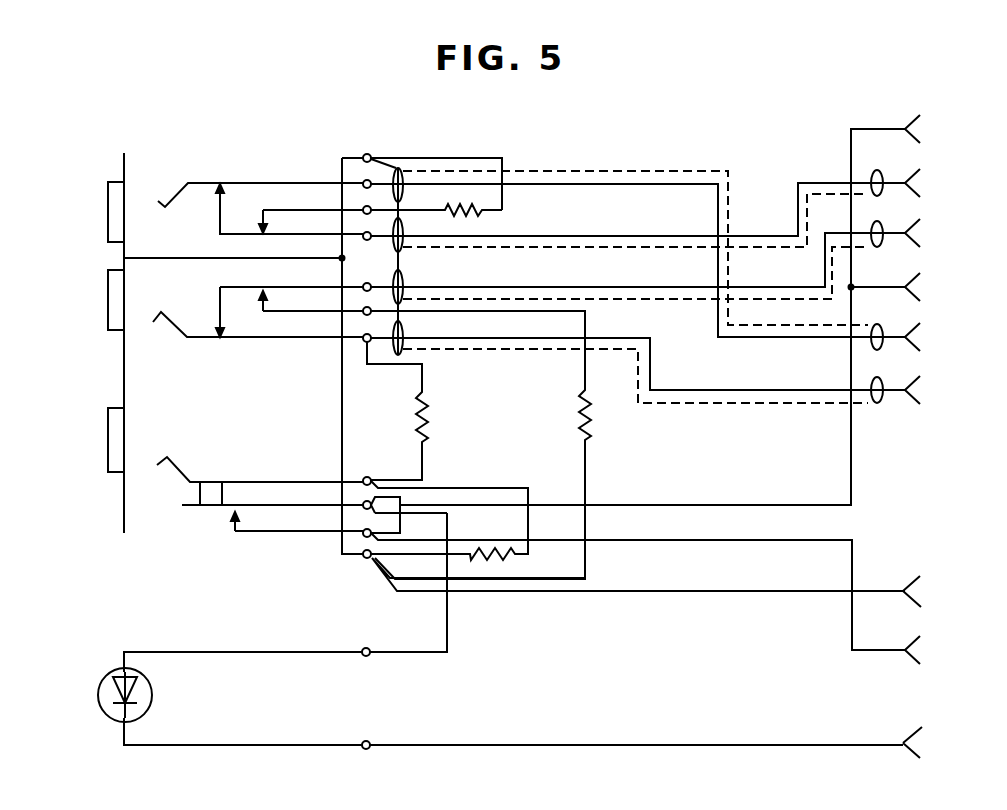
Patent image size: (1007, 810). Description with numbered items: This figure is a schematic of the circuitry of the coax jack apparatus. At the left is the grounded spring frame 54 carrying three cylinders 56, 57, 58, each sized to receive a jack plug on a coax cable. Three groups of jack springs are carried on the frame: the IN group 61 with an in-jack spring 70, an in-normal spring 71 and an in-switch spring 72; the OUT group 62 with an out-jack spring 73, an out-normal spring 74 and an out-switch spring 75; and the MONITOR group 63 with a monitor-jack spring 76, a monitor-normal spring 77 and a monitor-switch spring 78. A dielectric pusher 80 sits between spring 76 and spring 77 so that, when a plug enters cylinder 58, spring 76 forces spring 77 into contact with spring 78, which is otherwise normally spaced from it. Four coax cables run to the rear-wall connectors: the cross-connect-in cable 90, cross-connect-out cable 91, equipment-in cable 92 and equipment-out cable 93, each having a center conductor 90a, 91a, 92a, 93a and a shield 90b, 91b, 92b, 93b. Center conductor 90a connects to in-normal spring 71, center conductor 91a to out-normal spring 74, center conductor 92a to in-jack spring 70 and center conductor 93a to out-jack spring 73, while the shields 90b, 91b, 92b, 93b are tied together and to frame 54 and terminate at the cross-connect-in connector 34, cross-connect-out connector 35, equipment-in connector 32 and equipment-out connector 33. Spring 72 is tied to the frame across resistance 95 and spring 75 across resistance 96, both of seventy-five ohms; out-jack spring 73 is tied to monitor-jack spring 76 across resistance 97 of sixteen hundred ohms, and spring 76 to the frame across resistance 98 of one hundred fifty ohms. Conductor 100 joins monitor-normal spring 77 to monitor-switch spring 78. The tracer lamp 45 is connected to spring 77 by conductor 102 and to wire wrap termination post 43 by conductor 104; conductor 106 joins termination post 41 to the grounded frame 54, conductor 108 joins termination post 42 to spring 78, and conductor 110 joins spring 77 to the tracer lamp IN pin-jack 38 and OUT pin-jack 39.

The equipment-in connector 32 is at (905, 336).
The equipment-out connector 33 is at (906, 395).
The cross-connect-in connector 34 is at (905, 178).
The cross-connect-out connector 35 is at (905, 232).
The tracer lamp IN pin-jack 38 is at (905, 129).
The tracer lamp OUT pin-jack 39 is at (905, 286).
The wire wrap termination post 41 is at (903, 591).
The wire wrap termination post 42 is at (905, 650).
The wire wrap termination post 43 is at (903, 743).
The tracer lamp 45 is at (155, 697).
The spring frame 54 is at (124, 363).
The cylinder 56 is at (108, 182).
The cylinder 57 is at (108, 270).
The cylinder 58 is at (108, 472).
The IN group 61 is at (259, 177).
The OUT group 62 is at (258, 327).
The MONITOR group 63 is at (256, 505).
The in-jack spring 70 is at (258, 168).
The in-normal spring 71 is at (215, 230).
The in-switch spring 72 is at (283, 212).
The out-jack spring 73 is at (168, 318).
The out-normal spring 74 is at (295, 287).
The out-switch spring 75 is at (310, 311).
The monitor-jack spring 76 is at (180, 463).
The monitor-normal spring 77 is at (320, 482).
The monitor-switch spring 78 is at (300, 535).
The dielectric pusher 80 is at (190, 500).
The cross-connect-in cable 90 is at (638, 183).
The center conductor 90a is at (657, 236).
The shield 90b is at (679, 247).
The cross-connect-out cable 91 is at (638, 266).
The center conductor 91a is at (698, 287).
The shield 91b is at (610, 299).
The equipment-in cable 92 is at (812, 340).
The center conductor 92a is at (583, 183).
The shield 92b is at (680, 170).
The equipment-out cable 93 is at (638, 394).
The center conductor 93a is at (790, 392).
The shield 93b is at (712, 403).
The resistance 95 is at (485, 212).
The resistance 96 is at (590, 425).
The resistance 97 is at (430, 420).
The resistance 98 is at (505, 557).
The conductor 100 is at (405, 528).
The conductor 102 is at (405, 652).
The conductor 104 is at (498, 745).
The conductor 106 is at (688, 591).
The conductor 108 is at (676, 540).
The conductor 110 is at (672, 505).